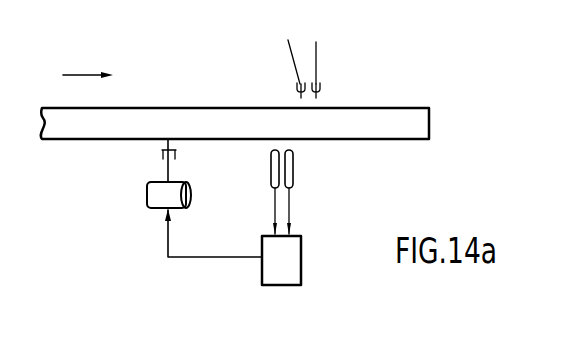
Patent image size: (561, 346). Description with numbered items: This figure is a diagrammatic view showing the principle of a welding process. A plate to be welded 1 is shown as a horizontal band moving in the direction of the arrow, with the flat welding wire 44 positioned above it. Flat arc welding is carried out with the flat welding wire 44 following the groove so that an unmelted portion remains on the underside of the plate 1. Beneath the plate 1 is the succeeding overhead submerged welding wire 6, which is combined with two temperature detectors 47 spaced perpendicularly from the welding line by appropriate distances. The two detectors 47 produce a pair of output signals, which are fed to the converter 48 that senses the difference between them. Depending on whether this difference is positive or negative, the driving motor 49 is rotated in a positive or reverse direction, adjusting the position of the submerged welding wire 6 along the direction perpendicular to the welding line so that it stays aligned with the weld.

The plate to be welded 1 is at (391, 111).
The submerged welding wire 6 is at (163, 148).
The flat welding wire 44 is at (296, 49).
The temperature detectors 47 is at (293, 181).
The converter 48 is at (301, 258).
The driving motor 49 is at (148, 201).